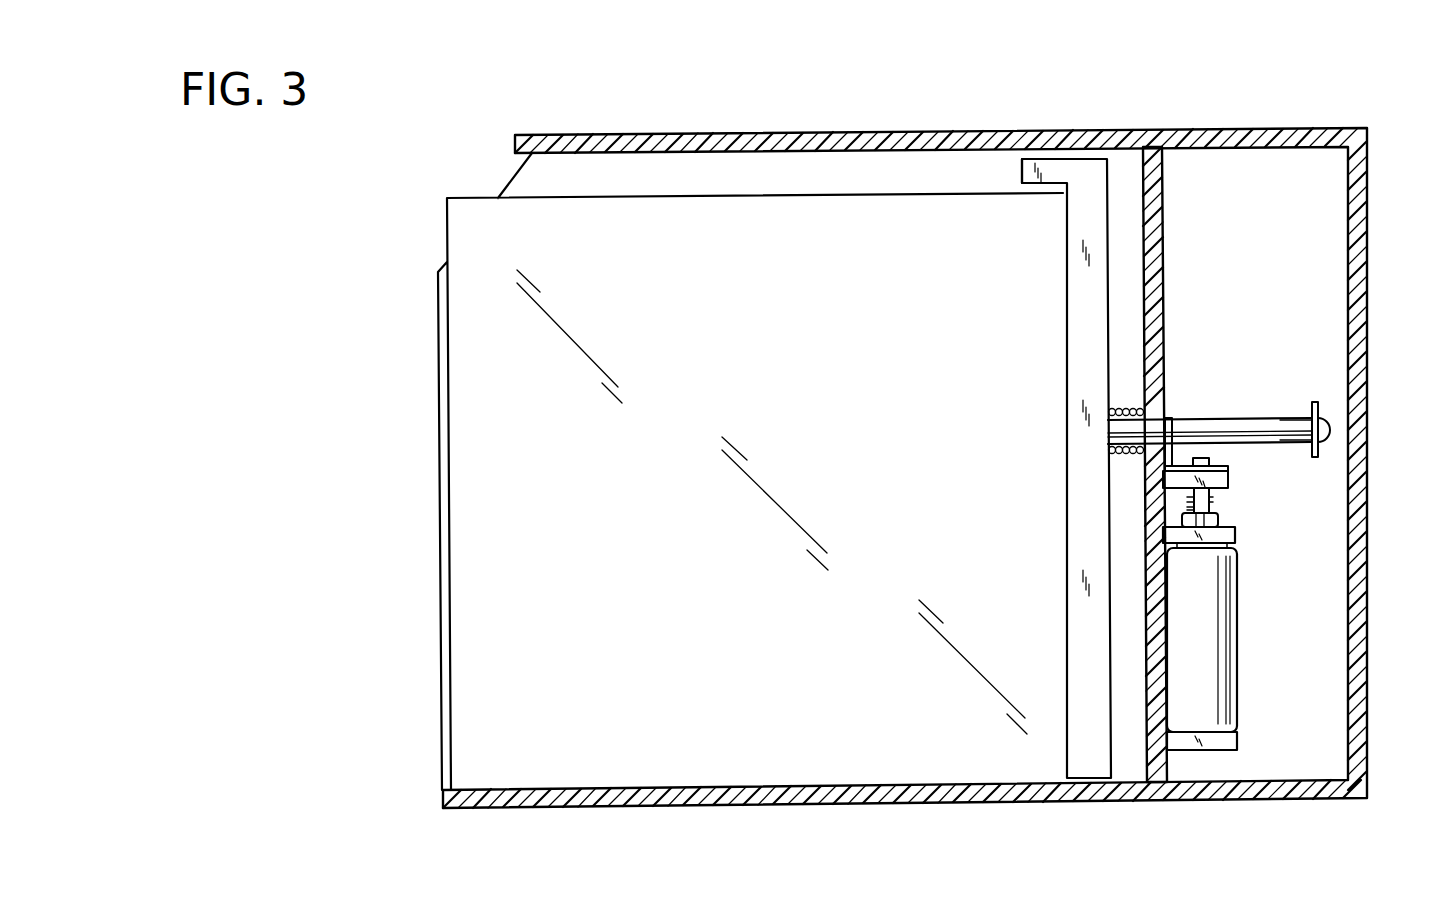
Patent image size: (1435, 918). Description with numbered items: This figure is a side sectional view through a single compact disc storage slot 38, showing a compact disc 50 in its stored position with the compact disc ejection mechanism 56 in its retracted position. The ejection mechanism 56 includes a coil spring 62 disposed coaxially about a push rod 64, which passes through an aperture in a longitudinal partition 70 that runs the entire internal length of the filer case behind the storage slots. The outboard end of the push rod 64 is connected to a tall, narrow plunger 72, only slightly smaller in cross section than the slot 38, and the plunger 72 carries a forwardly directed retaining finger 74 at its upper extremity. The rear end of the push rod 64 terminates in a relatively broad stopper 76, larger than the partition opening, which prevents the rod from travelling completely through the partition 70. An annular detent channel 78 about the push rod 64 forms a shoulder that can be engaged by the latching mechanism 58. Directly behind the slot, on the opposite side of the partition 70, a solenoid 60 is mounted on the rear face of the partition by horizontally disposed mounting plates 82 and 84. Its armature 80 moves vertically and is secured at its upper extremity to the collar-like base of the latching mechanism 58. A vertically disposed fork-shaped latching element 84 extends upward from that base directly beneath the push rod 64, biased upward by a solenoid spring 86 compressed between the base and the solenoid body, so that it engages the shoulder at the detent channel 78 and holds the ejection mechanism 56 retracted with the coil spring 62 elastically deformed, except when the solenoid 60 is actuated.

The compact disc storage slot 38 is at (832, 785).
The compact disc 50 is at (712, 548).
The compact disc ejection mechanism 56 is at (1207, 396).
The latching mechanism 58 is at (1220, 468).
The solenoid 60 is at (1242, 611).
The coil spring 62 is at (1115, 408).
The push rod 64 is at (1292, 425).
The longitudinal partition 70 is at (1163, 190).
The plunger 72 is at (1080, 341).
The retaining finger 74 is at (1022, 174).
The stopper 76 is at (1318, 412).
The detent channel 78 is at (1168, 420).
The armature 80 is at (1206, 458).
The mounting plate 82 is at (1227, 535).
The fork-shaped latching element 84 is at (1225, 740).
The solenoid spring 86 is at (1215, 500).